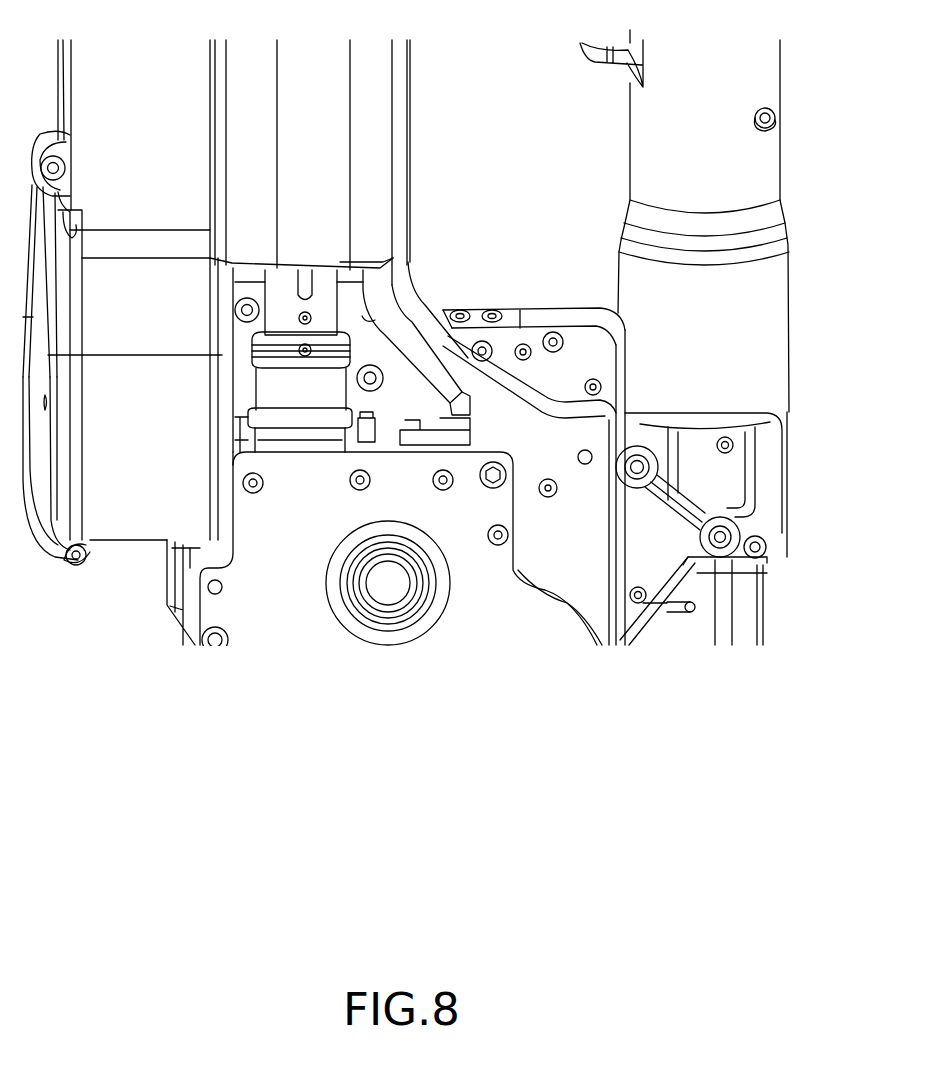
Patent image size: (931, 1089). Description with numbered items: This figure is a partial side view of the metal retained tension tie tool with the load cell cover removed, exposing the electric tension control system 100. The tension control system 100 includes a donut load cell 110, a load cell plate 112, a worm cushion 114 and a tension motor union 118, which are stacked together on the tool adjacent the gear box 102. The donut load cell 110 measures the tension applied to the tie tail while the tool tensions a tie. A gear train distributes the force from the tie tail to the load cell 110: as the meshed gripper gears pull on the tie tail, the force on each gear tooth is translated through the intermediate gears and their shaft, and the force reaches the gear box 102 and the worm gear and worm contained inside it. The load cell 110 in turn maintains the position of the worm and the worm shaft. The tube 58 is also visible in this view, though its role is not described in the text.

The fork tube 58 is at (323, 93).
The tension motor union 118 is at (323, 293).
The electric tension control system 100 is at (365, 340).
The worm cushion 114 is at (388, 392).
The load cell plate 112 is at (273, 417).
The donut load cell 110 is at (272, 438).
The gear box 102 is at (260, 603).